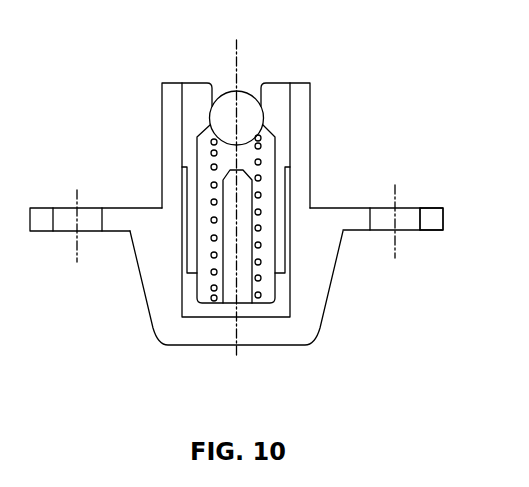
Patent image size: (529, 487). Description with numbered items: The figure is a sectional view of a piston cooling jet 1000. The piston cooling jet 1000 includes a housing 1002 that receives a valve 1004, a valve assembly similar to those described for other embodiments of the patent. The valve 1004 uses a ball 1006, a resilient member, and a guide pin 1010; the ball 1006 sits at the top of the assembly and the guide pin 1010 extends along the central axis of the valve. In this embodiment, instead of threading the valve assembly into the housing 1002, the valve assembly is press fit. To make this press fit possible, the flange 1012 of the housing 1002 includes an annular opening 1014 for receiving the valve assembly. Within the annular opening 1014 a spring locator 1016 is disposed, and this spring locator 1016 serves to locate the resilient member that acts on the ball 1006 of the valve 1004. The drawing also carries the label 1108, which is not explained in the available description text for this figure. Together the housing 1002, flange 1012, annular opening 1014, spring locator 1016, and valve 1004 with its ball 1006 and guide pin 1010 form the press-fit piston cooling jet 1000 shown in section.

The piston cooling jet 1000 is at (358, 127).
The housing 1002 is at (350, 208).
The valve 1004 is at (138, 137).
The ball 1006 is at (247, 101).
The guide pin 1010 is at (242, 280).
The flange 1012 is at (430, 217).
The annular opening 1014 is at (288, 183).
The spring locator 1016 is at (192, 310).
The hole 1108 is at (214, 185).